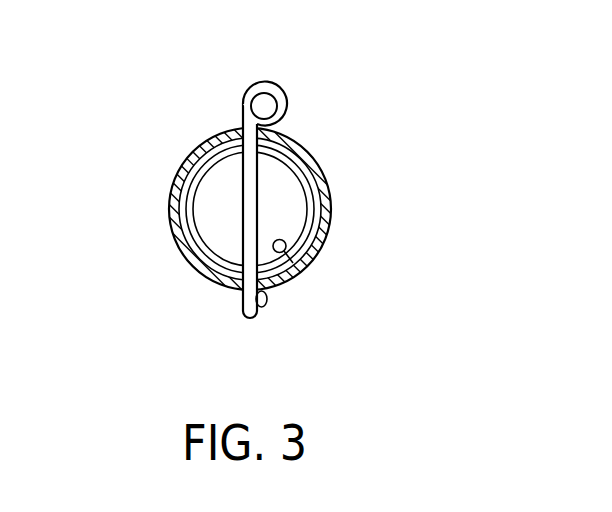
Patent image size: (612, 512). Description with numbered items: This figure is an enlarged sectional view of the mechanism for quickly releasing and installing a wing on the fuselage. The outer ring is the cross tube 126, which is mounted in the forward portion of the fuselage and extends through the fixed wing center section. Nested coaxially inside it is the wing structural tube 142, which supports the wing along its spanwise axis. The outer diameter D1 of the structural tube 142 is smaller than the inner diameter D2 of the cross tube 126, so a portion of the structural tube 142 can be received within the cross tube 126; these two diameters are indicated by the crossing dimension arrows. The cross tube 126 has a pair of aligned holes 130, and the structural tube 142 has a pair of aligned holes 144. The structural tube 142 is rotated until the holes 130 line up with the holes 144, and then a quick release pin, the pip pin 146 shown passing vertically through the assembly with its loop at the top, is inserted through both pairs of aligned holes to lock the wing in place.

The cross tube 126 is at (322, 177).
The aligned holes 144 is at (282, 146).
The wing structural tube 142 is at (292, 270).
The aligned holes 130 is at (235, 137).
The pip pin 146 is at (267, 82).
The outer diameter of structural tube D1 is at (302, 235).
The inner diameter of cross tube D2 is at (302, 185).